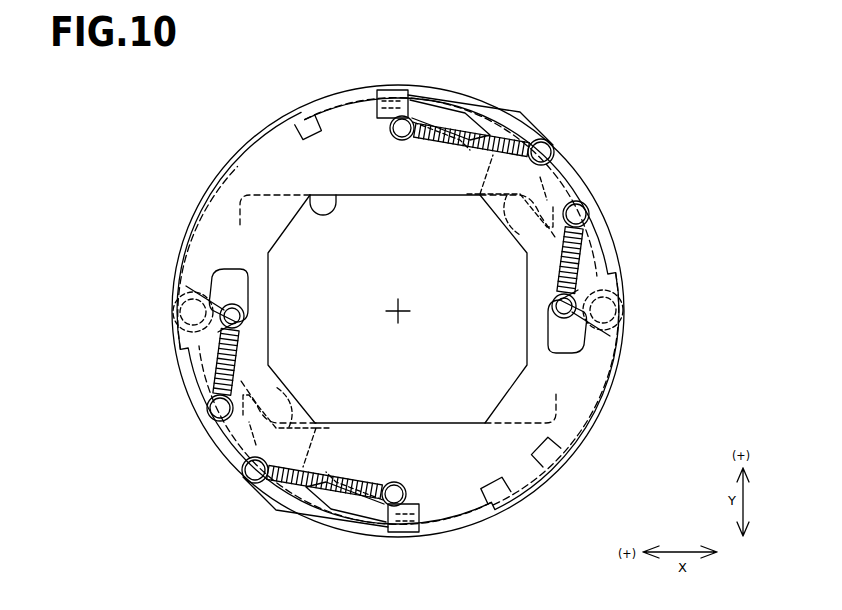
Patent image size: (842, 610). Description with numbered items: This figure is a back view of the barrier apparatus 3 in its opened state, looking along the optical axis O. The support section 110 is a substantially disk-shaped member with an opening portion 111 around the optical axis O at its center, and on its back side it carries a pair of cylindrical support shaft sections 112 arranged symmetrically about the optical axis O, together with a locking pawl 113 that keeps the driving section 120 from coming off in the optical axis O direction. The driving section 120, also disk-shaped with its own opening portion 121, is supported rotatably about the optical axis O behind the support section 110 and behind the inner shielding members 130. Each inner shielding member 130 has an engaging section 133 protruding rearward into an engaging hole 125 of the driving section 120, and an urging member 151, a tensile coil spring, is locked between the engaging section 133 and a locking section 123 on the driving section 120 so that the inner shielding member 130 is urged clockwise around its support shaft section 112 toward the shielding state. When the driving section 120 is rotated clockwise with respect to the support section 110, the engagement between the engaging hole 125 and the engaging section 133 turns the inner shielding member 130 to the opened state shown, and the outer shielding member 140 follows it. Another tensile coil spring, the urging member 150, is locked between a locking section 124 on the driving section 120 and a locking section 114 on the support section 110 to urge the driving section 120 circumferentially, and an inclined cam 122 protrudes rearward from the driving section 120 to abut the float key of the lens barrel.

The barrier apparatus 3 is at (150, 149).
The support section 110 is at (178, 247).
The opening portion 111 is at (307, 193).
The support shaft section 112 is at (616, 298).
The locking pawl 113 is at (392, 89).
The locking section 114 is at (553, 141).
The driving section 120 is at (250, 147).
The opening portion 121 is at (308, 127).
The inclined cam 122 is at (523, 478).
The locking section 123 is at (588, 207).
The locking section 124 is at (410, 118).
The engaging hole 125 is at (580, 346).
The inner shielding member 130 is at (486, 194).
The engaging section 133 is at (590, 322).
The outer shielding member 140 is at (505, 226).
The urging member 150 is at (482, 136).
The urging member 151 is at (580, 252).
The optical axis O is at (402, 310).